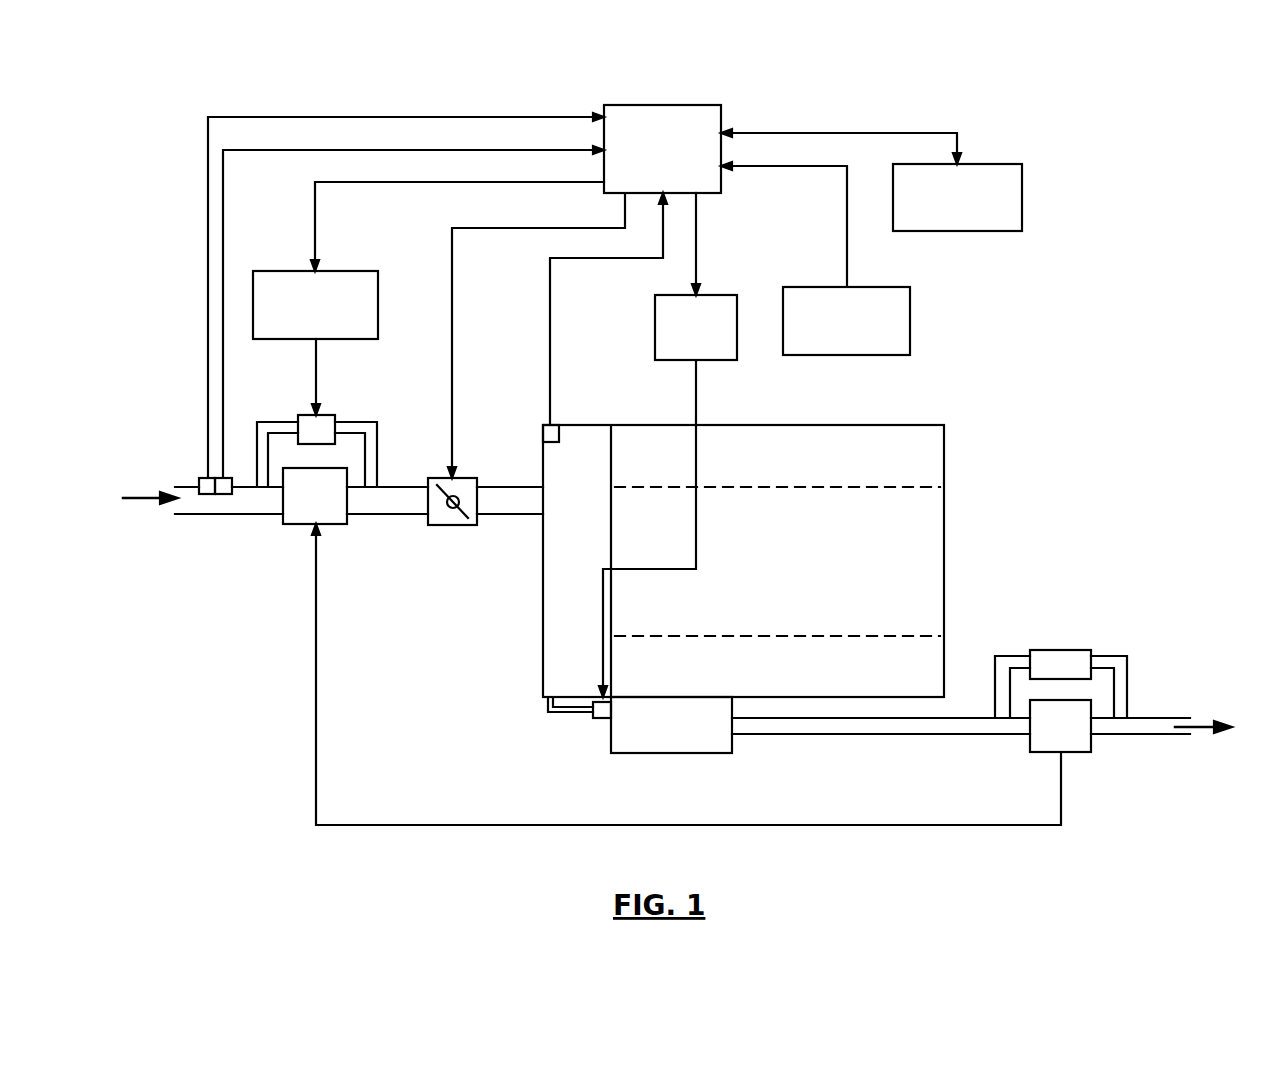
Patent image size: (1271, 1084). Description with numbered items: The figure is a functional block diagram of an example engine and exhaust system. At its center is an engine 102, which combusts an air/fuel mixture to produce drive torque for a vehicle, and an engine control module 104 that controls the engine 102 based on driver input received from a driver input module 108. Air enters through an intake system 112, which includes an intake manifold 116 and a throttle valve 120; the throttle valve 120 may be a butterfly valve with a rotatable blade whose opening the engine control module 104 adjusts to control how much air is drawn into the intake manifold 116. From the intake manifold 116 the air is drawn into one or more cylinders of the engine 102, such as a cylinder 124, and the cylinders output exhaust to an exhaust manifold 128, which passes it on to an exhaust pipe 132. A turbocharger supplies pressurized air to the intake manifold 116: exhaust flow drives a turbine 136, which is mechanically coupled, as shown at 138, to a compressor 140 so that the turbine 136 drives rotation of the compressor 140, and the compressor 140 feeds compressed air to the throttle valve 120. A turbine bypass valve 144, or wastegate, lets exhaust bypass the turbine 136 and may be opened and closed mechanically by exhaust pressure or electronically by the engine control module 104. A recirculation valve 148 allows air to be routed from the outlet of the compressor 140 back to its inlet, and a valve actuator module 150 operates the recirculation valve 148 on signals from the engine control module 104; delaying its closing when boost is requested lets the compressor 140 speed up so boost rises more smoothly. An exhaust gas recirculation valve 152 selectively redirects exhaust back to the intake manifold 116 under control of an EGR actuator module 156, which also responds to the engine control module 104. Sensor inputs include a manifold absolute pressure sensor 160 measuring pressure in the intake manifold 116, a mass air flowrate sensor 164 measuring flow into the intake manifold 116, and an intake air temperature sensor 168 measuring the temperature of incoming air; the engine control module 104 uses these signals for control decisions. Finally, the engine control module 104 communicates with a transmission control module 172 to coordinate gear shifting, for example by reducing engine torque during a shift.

The engine 102 is at (845, 425).
The engine control module 104 is at (662, 104).
The driver input module 108 is at (885, 287).
The intake system 112 is at (130, 512).
The intake manifold 116 is at (543, 635).
The throttle valve 120 is at (462, 526).
The cylinder 124 is at (812, 487).
The exhaust manifold 128 is at (672, 753).
The exhaust pipe 132 is at (832, 736).
The turbine 136 is at (1082, 752).
The mechanical coupling 138 is at (316, 648).
The compressor 140 is at (348, 525).
The turbine bypass valve 144 is at (1036, 650).
The recirculation valve 148 is at (311, 415).
The valve actuator module 150 is at (356, 271).
The exhaust gas recirculation valve 152 is at (600, 718).
The EGR actuator module 156 is at (717, 295).
The manifold absolute pressure sensor 160 is at (543, 433).
The mass air flowrate sensor 164 is at (222, 495).
The intake air temperature sensor 168 is at (200, 478).
The transmission control module 172 is at (982, 164).